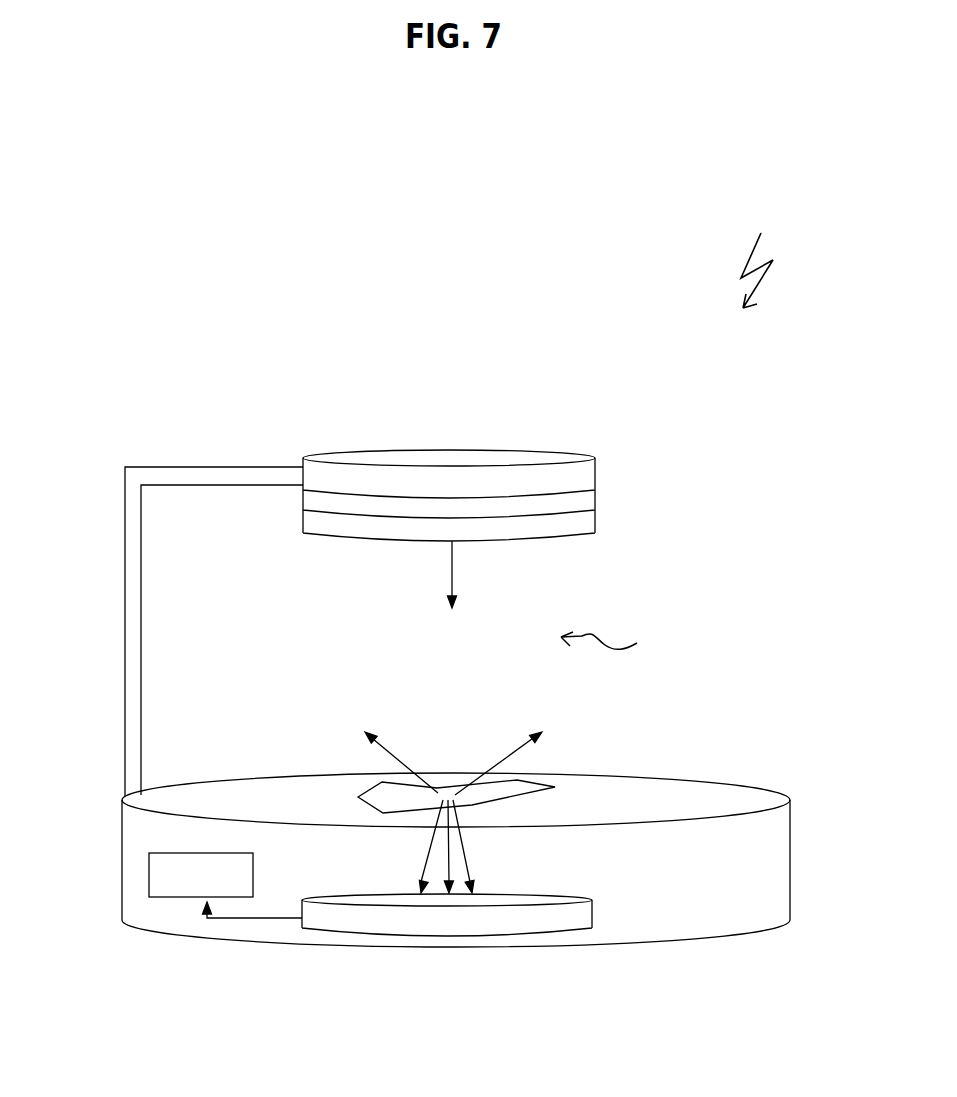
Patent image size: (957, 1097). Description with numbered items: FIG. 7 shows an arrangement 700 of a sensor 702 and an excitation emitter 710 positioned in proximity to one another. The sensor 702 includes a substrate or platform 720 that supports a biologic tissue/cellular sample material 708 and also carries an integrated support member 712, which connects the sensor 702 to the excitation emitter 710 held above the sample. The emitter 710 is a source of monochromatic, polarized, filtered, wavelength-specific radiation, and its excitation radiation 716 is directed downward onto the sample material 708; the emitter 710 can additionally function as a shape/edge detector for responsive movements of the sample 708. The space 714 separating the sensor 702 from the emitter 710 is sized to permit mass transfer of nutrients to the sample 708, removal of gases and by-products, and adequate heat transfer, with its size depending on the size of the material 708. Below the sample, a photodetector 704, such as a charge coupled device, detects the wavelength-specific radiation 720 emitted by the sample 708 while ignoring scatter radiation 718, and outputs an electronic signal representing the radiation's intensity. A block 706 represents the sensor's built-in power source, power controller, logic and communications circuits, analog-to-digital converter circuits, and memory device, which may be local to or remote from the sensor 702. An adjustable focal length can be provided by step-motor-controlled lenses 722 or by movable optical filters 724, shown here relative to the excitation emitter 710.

The spectroscopy system 700 is at (762, 252).
The sensor 702 is at (713, 938).
The photodetector 704 is at (463, 937).
The built-in power source, power controller, logic and communications circuits, anal 706 is at (172, 897).
The biologic tissue/cellular sample material 708 is at (360, 797).
The excitation emitter 710 is at (595, 483).
The integrated support member 712 is at (214, 463).
The space 714 is at (620, 647).
The excitation radiation 716 is at (452, 568).
The scatter radiation 718 is at (510, 750).
The platform / wavelength-specific radiation 720 is at (465, 860).
The lens 722 is at (595, 500).
The optical filter 724 is at (593, 535).